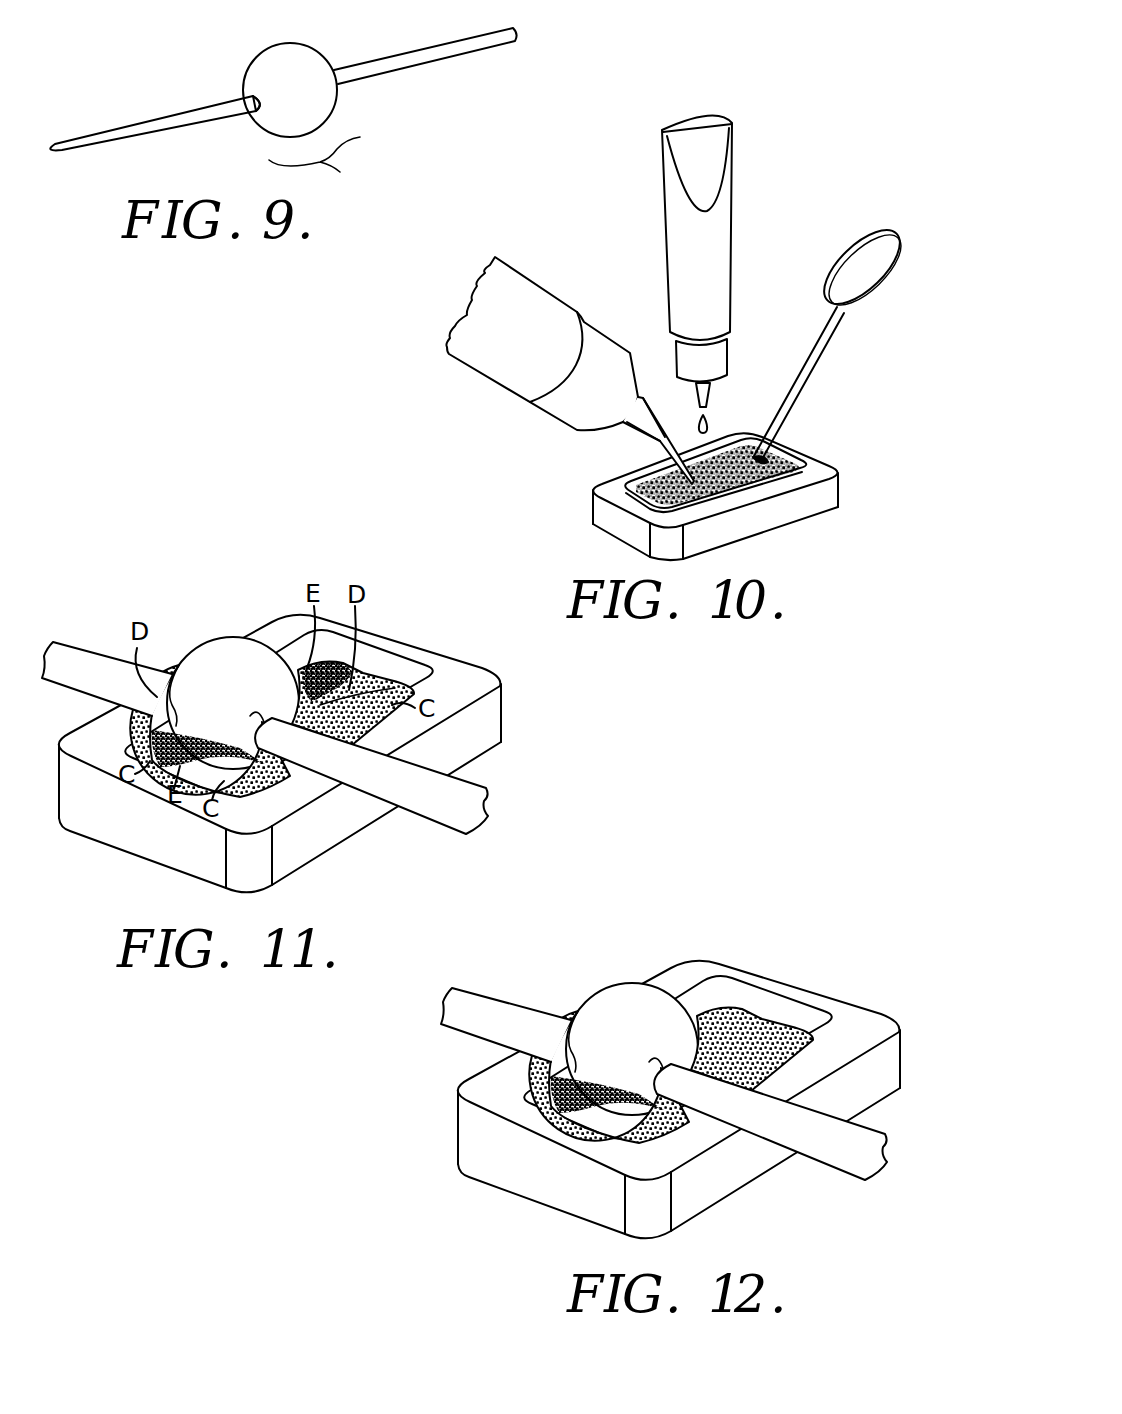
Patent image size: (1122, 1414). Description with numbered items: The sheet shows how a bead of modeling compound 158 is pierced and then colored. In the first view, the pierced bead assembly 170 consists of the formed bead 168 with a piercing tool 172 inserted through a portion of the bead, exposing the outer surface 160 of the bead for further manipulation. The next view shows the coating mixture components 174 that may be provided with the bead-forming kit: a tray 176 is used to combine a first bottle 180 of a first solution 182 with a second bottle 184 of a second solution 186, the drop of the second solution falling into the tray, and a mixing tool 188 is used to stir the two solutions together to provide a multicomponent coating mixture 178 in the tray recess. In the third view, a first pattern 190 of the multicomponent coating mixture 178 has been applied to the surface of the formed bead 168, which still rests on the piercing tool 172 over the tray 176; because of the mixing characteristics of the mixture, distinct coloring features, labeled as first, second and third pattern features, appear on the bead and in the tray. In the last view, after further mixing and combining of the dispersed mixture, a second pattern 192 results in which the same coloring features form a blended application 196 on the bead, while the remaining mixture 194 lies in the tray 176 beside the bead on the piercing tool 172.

In FIG. 9, the modeling compound 158 is at (273, 46).
In FIG. 11, the modeling compound 158 is at (241, 637).
In FIG. 12, the modeling compound 158 is at (630, 1033).
In FIG. 9, the outer surface 160 is at (317, 102).
In FIG. 9, the formed bead 168 is at (330, 164).
In FIG. 9, the needle assembly 170 is at (128, 25).
In FIG. 9, the piercing tool 172 is at (477, 36).
In FIG. 11, the piercing tool 172 is at (449, 820).
In FIG. 12, the piercing tool 172 is at (676, 1103).
In FIG. 10, the coating mixture components 174 is at (840, 191).
In FIG. 10, the tray 176 is at (813, 507).
In FIG. 11, the tray 176 is at (337, 838).
In FIG. 12, the tray 176 is at (679, 1087).
In FIG. 10, the multicomponent coating mixture 178 is at (773, 462).
In FIG. 11, the multicomponent coating mixture 178 is at (377, 672).
In FIG. 10, the first bottle 180 is at (517, 383).
In FIG. 10, the first solution 182 is at (677, 448).
In FIG. 10, the second bottle 184 is at (715, 284).
In FIG. 10, the second solution 186 is at (708, 428).
In FIG. 10, the mixing tool 188 is at (821, 357).
In FIG. 11, the first pattern 190 is at (154, 584).
In FIG. 12, the cured ball assembly 192 is at (608, 924).
In FIG. 12, the cured compound in tray 194 is at (780, 1024).
In FIG. 12, the blended application 196 is at (584, 1123).